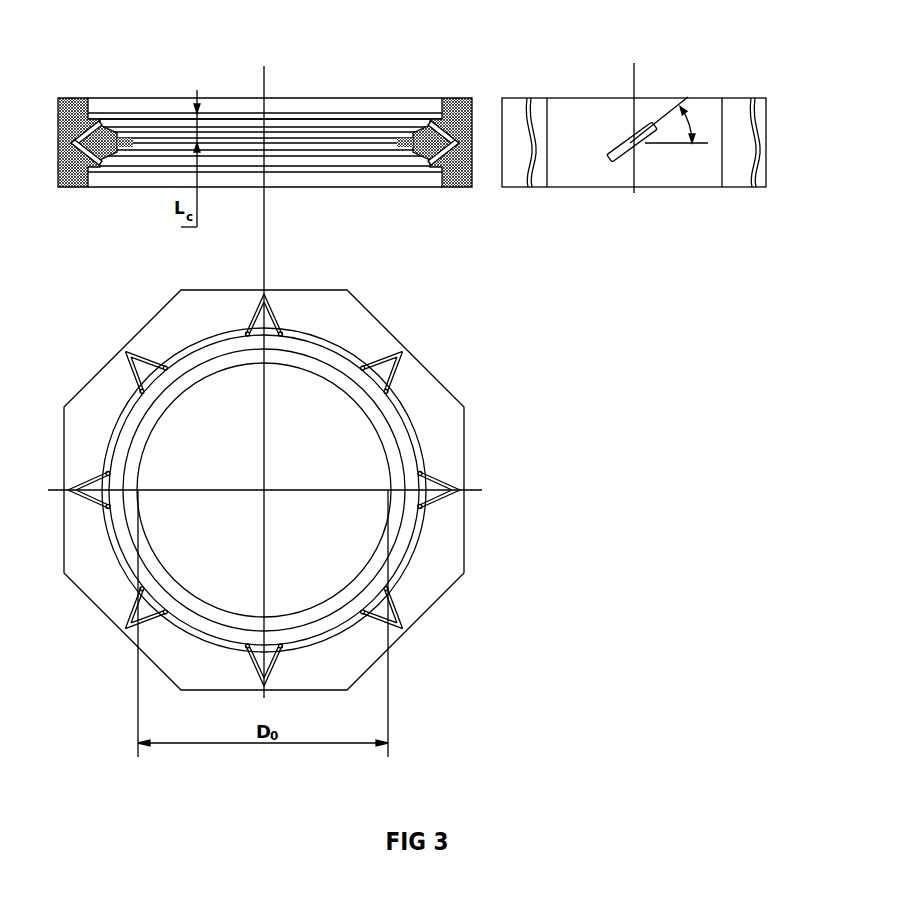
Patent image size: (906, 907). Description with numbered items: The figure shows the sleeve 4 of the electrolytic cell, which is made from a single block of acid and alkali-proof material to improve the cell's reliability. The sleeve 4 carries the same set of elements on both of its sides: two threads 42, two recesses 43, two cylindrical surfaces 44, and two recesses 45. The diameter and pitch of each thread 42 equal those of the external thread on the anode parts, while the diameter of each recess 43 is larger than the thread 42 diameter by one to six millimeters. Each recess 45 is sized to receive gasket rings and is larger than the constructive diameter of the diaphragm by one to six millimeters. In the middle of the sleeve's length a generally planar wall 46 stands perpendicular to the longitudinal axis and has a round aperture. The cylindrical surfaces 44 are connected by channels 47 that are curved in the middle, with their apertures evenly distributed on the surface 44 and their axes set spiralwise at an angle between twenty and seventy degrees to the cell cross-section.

The sleeve 4 is at (452, 110).
The thread 42 is at (89, 101).
The recess 43 is at (122, 118).
The cylindrical surface 44 is at (442, 117).
The recess 45 is at (408, 132).
The wall 46 is at (130, 142).
The channel 47 is at (630, 140).